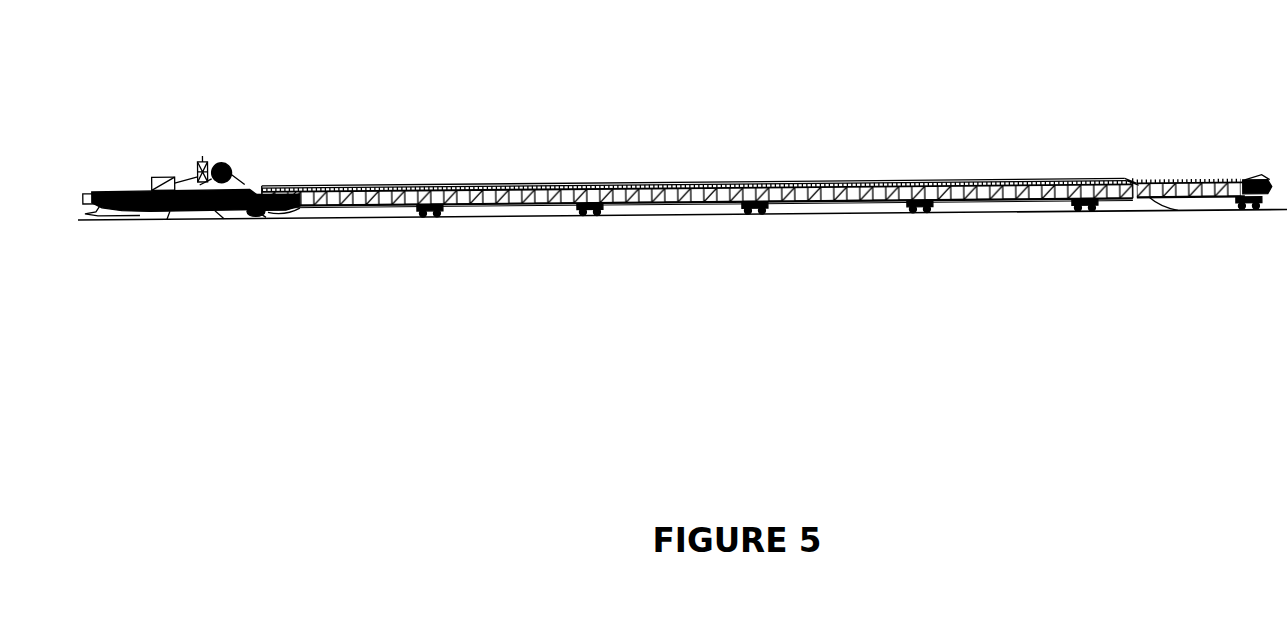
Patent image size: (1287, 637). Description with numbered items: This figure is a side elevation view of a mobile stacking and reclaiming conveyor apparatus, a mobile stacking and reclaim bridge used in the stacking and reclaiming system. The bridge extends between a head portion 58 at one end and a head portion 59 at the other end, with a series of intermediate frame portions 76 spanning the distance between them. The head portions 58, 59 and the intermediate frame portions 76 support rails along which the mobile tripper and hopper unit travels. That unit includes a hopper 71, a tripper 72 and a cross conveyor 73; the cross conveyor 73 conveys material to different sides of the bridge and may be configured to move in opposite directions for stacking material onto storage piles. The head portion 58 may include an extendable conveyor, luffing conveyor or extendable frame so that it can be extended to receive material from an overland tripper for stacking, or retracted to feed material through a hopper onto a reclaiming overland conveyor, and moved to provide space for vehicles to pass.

The head portion 58 is at (120, 218).
The head portion 59 is at (1229, 185).
The hopper 71 is at (160, 178).
The tripper 72 is at (205, 162).
The cross conveyor 73 is at (232, 170).
The intermediate frame portions 76 is at (350, 204).